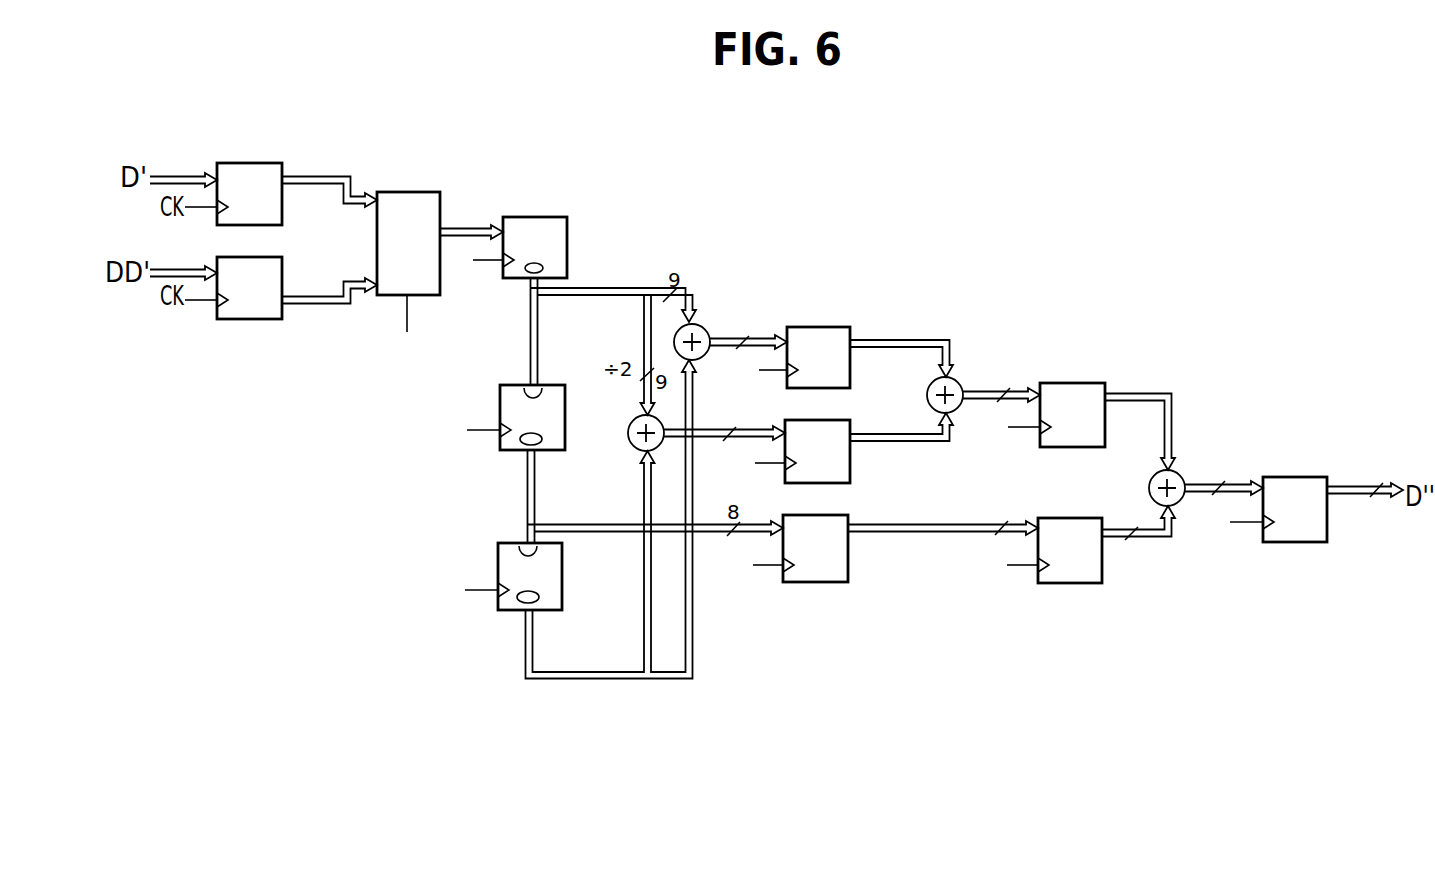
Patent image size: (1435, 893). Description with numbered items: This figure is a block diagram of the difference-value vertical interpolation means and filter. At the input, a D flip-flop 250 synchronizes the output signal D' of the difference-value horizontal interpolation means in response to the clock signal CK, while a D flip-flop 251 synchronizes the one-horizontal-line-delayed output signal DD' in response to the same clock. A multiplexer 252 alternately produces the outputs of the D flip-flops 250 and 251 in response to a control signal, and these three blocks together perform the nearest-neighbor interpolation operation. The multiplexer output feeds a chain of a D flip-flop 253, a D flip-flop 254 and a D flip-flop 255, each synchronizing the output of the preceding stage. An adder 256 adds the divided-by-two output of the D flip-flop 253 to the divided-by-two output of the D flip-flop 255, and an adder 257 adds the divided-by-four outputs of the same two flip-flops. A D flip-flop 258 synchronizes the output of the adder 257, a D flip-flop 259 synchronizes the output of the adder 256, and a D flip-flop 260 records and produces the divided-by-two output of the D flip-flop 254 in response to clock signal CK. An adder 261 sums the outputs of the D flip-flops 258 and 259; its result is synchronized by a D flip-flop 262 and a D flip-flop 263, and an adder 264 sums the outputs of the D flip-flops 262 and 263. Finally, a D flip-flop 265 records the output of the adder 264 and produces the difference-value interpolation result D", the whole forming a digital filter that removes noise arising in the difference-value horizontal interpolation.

The D flip-flop 250 is at (238, 163).
The D flip-flop 251 is at (262, 257).
The multiplexer 252 is at (412, 192).
The D flip-flop 253 is at (530, 217).
The D flip-flop 254 is at (545, 450).
The D flip-flop 255 is at (498, 610).
The adder 256 is at (632, 421).
The adder 257 is at (705, 327).
The D flip-flop 258 is at (810, 327).
The D flip-flop 259 is at (827, 420).
The D flip-flop 260 is at (786, 582).
The adder 261 is at (959, 378).
The D flip-flop 262 is at (1058, 383).
The D flip-flop 263 is at (1077, 498).
The adder 264 is at (1180, 474).
The D flip-flop 265 is at (1298, 477).